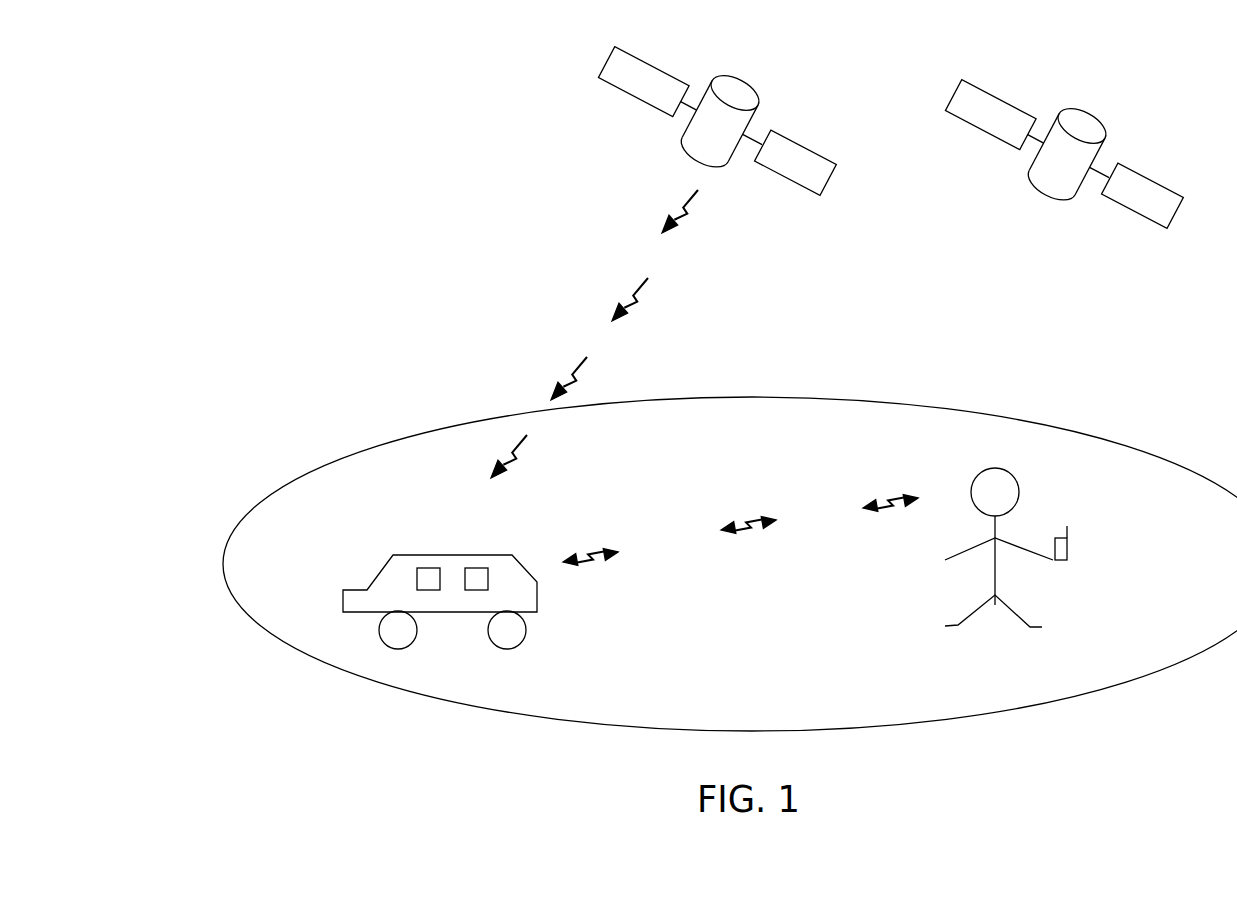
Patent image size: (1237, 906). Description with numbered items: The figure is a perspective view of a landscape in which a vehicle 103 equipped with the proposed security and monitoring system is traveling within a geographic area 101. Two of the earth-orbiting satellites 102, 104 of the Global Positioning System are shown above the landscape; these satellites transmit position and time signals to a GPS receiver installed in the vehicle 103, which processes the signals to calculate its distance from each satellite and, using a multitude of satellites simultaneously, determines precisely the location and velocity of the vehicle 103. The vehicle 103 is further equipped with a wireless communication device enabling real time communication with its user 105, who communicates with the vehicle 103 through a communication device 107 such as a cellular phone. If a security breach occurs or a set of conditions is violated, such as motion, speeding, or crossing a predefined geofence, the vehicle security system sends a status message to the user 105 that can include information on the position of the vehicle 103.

The geographic area 101 is at (812, 400).
The orbiting satellite 102 is at (762, 90).
The vehicle 103 is at (489, 543).
The orbiting satellite 104 is at (1090, 116).
The user 105 is at (1018, 484).
The communication device 107 is at (1070, 548).